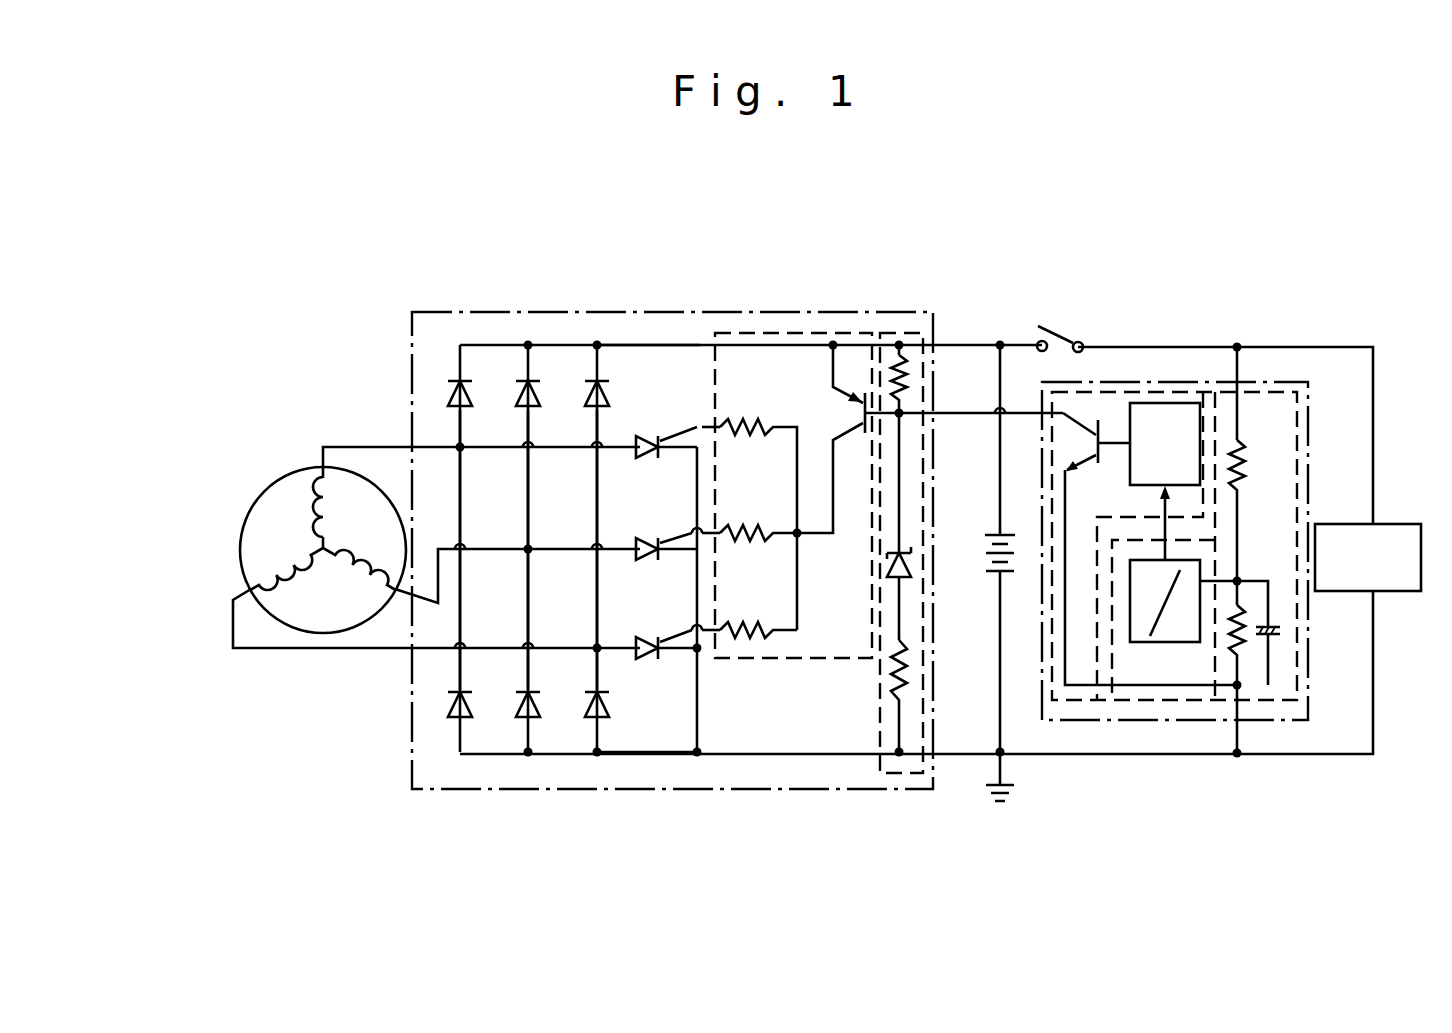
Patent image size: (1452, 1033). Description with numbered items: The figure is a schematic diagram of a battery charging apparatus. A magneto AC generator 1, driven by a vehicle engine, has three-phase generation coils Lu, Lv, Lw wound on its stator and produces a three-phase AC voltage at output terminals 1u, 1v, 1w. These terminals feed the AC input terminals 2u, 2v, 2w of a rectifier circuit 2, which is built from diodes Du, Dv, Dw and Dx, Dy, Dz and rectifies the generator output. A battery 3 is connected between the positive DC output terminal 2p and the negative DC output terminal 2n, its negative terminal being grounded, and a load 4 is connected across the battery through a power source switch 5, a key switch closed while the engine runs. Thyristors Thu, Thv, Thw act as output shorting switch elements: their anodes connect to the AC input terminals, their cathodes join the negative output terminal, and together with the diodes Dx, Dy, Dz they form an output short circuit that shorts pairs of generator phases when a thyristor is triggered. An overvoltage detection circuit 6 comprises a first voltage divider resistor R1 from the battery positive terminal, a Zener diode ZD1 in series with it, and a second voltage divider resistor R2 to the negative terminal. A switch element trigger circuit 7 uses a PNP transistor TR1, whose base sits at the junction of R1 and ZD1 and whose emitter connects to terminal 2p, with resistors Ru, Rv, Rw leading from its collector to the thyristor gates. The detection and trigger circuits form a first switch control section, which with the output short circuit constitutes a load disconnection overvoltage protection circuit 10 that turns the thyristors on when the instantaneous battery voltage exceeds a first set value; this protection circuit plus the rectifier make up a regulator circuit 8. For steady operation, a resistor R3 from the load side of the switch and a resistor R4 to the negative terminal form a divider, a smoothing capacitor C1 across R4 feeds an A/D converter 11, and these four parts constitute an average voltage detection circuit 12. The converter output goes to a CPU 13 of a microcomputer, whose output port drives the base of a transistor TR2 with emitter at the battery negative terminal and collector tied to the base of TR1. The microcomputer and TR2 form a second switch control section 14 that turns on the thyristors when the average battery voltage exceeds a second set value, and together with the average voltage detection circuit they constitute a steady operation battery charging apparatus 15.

The magneto AC generator 1 is at (292, 438).
The U-phase output terminal of the generator 1u is at (333, 445).
The V-phase output terminal of the generator 1v is at (400, 600).
The W-phase output terminal of the generator 1w is at (240, 600).
The U-phase generation coil Lu is at (315, 500).
The V-phase generation coil Lv is at (340, 590).
The W-phase generation coil Lw is at (278, 575).
The rectifier circuit 2 is at (595, 340).
The positive DC output terminal of the rectifier circuit 2p is at (617, 343).
The negative DC output terminal of the rectifier circuit 2n is at (655, 752).
The U-phase AC input terminal of the rectifier circuit 2u is at (462, 450).
The V-phase AC input terminal of the rectifier circuit 2v is at (530, 548).
The W-phase AC input terminal of the rectifier circuit 2w is at (596, 648).
The diode Du is at (450, 392).
The diode Dv is at (510, 392).
The diode Dw is at (582, 392).
The diode Dx is at (450, 705).
The diode Dy is at (520, 705).
The diode Dz is at (608, 706).
The thyristor Thu is at (652, 437).
The thyristor Thv is at (655, 542).
The thyristor Thw is at (655, 660).
The battery 3 is at (985, 537).
The load 4 is at (1395, 524).
The power source switch 5 is at (1048, 340).
The overvoltage detection circuit 6 is at (906, 332).
The switch element trigger circuit 7 is at (858, 332).
The regulator circuit 8 is at (693, 312).
The first switch control section / load disconnection overvoltage protection circuit 10 is at (950, 262).
The A/D converter 11 is at (1150, 643).
The average voltage detection circuit 12 is at (1285, 387).
The CPU 13 is at (1147, 395).
The second switch control section 14 is at (1180, 383).
The steady operation battery charging apparatus 15 is at (1253, 378).
The PNP transistor TR1 is at (852, 392).
The transistor TR2 is at (1082, 415).
The first voltage divider resistor R1 is at (910, 380).
The second voltage divider resistor R2 is at (896, 676).
The resistor R3 is at (1243, 470).
The resistor R4 is at (1232, 630).
The resistor Ru is at (748, 426).
The resistor Rv is at (745, 532).
The resistor Rw is at (742, 629).
The Zener diode ZD1 is at (908, 564).
The smoothing capacitor C1 is at (1270, 632).